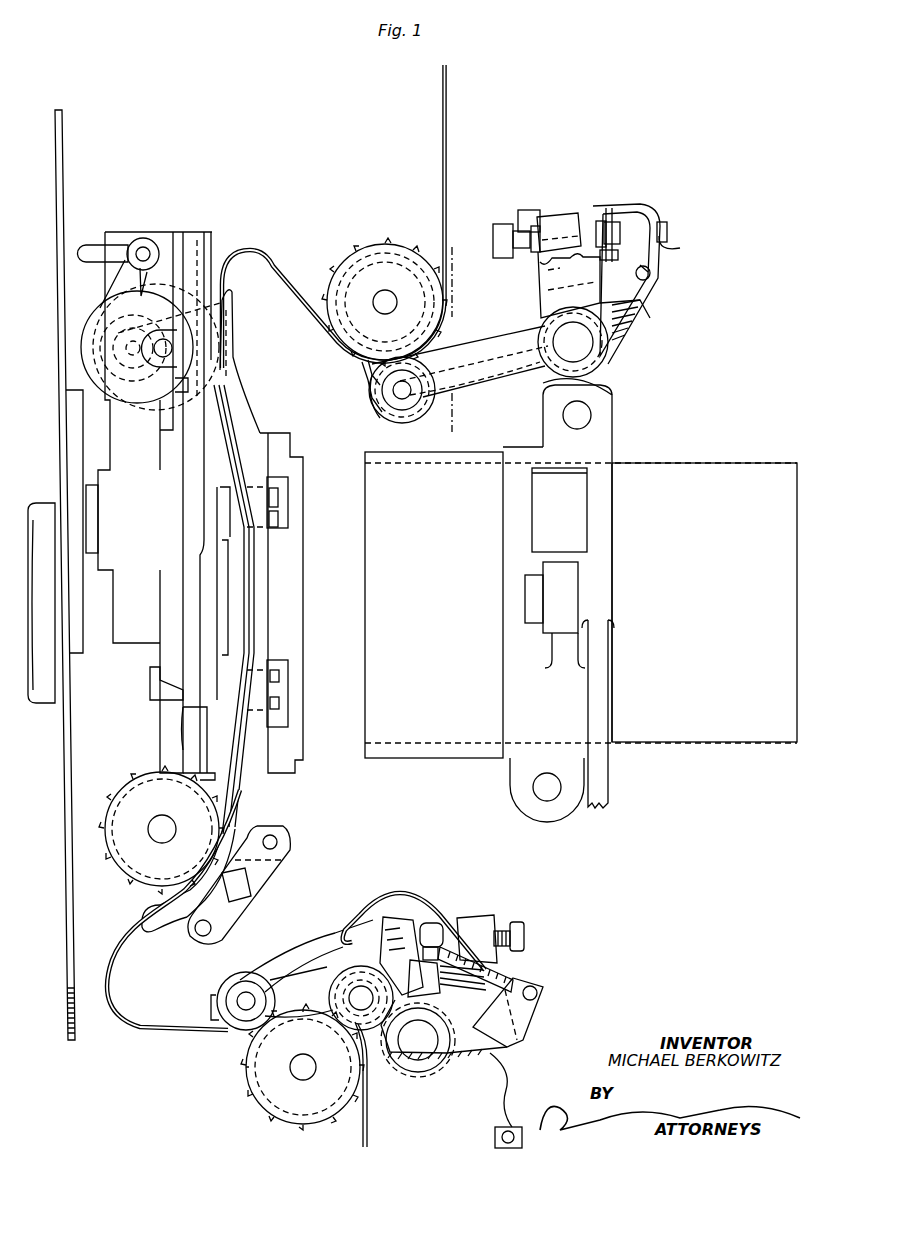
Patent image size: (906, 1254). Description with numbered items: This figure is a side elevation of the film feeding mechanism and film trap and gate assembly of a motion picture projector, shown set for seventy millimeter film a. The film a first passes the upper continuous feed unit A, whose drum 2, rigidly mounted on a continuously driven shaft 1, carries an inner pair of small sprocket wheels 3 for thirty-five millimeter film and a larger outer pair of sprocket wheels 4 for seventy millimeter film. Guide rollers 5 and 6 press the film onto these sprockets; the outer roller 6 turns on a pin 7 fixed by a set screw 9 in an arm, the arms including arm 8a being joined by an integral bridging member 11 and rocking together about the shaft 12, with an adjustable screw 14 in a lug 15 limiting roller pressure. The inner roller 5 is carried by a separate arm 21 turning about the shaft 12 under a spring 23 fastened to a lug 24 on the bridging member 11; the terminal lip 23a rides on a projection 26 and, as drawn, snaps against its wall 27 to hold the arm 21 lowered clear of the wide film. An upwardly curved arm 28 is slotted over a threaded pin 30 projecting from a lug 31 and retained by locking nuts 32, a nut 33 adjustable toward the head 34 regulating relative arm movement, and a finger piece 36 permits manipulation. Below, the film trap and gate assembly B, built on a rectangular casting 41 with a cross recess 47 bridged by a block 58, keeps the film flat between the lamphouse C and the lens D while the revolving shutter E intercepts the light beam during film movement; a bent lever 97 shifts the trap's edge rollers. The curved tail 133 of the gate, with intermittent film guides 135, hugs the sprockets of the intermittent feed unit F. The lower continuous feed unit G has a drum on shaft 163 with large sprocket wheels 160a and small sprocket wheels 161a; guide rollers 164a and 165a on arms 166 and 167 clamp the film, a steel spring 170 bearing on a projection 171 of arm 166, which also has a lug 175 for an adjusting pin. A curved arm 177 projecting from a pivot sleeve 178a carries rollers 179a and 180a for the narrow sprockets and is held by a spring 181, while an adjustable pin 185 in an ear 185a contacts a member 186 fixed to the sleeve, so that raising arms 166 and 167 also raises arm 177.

The film a is at (448, 118).
The upper continuous feed unit A is at (372, 244).
The shaft 1 is at (383, 300).
The drum 2 is at (348, 262).
The sprocket wheel 3 is at (422, 258).
The sprocket wheel 4 is at (397, 247).
The guide roller 5 is at (410, 420).
The guide roller 6 is at (355, 357).
The pin 7 is at (366, 378).
The arm 8a is at (510, 380).
The set screw 9 is at (380, 396).
The bridging member 11 is at (536, 285).
The shaft 12 is at (585, 346).
The adjustable screw 14 is at (495, 230).
The lug 15 is at (522, 213).
The arm 21 is at (503, 333).
The spring 23 is at (645, 210).
The terminal lip 23a is at (680, 248).
The lug 24 is at (600, 215).
The projection 26 is at (645, 310).
The wall 27 is at (655, 262).
The upwardly curved arm 28 is at (635, 322).
The threaded pin 30 is at (613, 262).
The lug 31 is at (560, 215).
The locking nuts 32 is at (610, 220).
The nut 33 is at (618, 222).
The head 34 is at (668, 228).
The finger piece 36 is at (650, 276).
The casting 41 is at (190, 693).
The recess 47 is at (222, 648).
The block 58 is at (215, 723).
The bent lever 97 is at (108, 287).
The film trap and gate assembly B is at (185, 615).
The lamphouse C is at (45, 713).
The lens D is at (452, 745).
The revolving shutter E is at (72, 1042).
The lower intermittent feed unit F is at (140, 873).
The lower continuous feed unit G is at (248, 1068).
The tail 133 is at (133, 910).
The intermittent film guides 135 is at (190, 930).
The sprocket wheel 160a is at (267, 1120).
The sprocket wheel 161a is at (245, 1069).
The shaft 163 is at (305, 1070).
The guide roller 164a is at (247, 1032).
The guide roller 165a is at (363, 1075).
The arm 166 is at (333, 932).
The arm 167 is at (299, 992).
The steel spring 170 is at (512, 1100).
The projection 171 is at (466, 1062).
The lug 175 is at (520, 912).
The curved arm 177 is at (305, 947).
The roller shaft 178a is at (350, 1000).
The guide roller 179a is at (255, 968).
The guide roller 180a is at (368, 966).
The spring 181 is at (412, 897).
The adjustable pin 185 is at (505, 982).
The ear 185a is at (483, 930).
The member 186 is at (523, 1025).